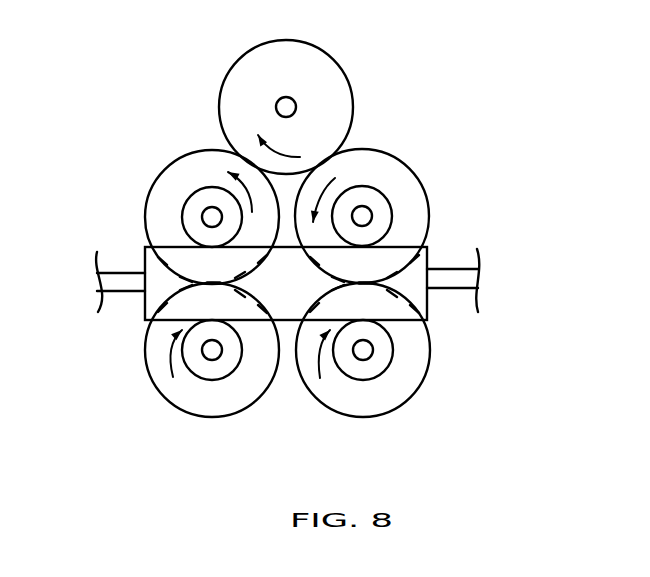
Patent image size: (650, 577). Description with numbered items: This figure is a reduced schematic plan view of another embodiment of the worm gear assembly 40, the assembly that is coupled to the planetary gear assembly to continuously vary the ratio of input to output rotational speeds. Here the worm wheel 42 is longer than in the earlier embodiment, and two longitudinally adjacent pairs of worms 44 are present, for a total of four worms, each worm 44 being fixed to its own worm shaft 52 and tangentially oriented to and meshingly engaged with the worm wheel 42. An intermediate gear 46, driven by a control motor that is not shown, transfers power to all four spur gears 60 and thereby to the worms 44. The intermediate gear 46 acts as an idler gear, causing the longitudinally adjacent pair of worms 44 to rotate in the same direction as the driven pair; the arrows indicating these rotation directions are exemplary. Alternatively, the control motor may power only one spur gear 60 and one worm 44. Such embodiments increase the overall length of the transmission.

The worm gear assembly 40 is at (112, 74).
The worm wheel 42 is at (423, 265).
The worm 44 is at (202, 203).
The intermediate gear 46 is at (328, 87).
The worm shaft 52 is at (277, 102).
The spur gear 60 is at (212, 157).